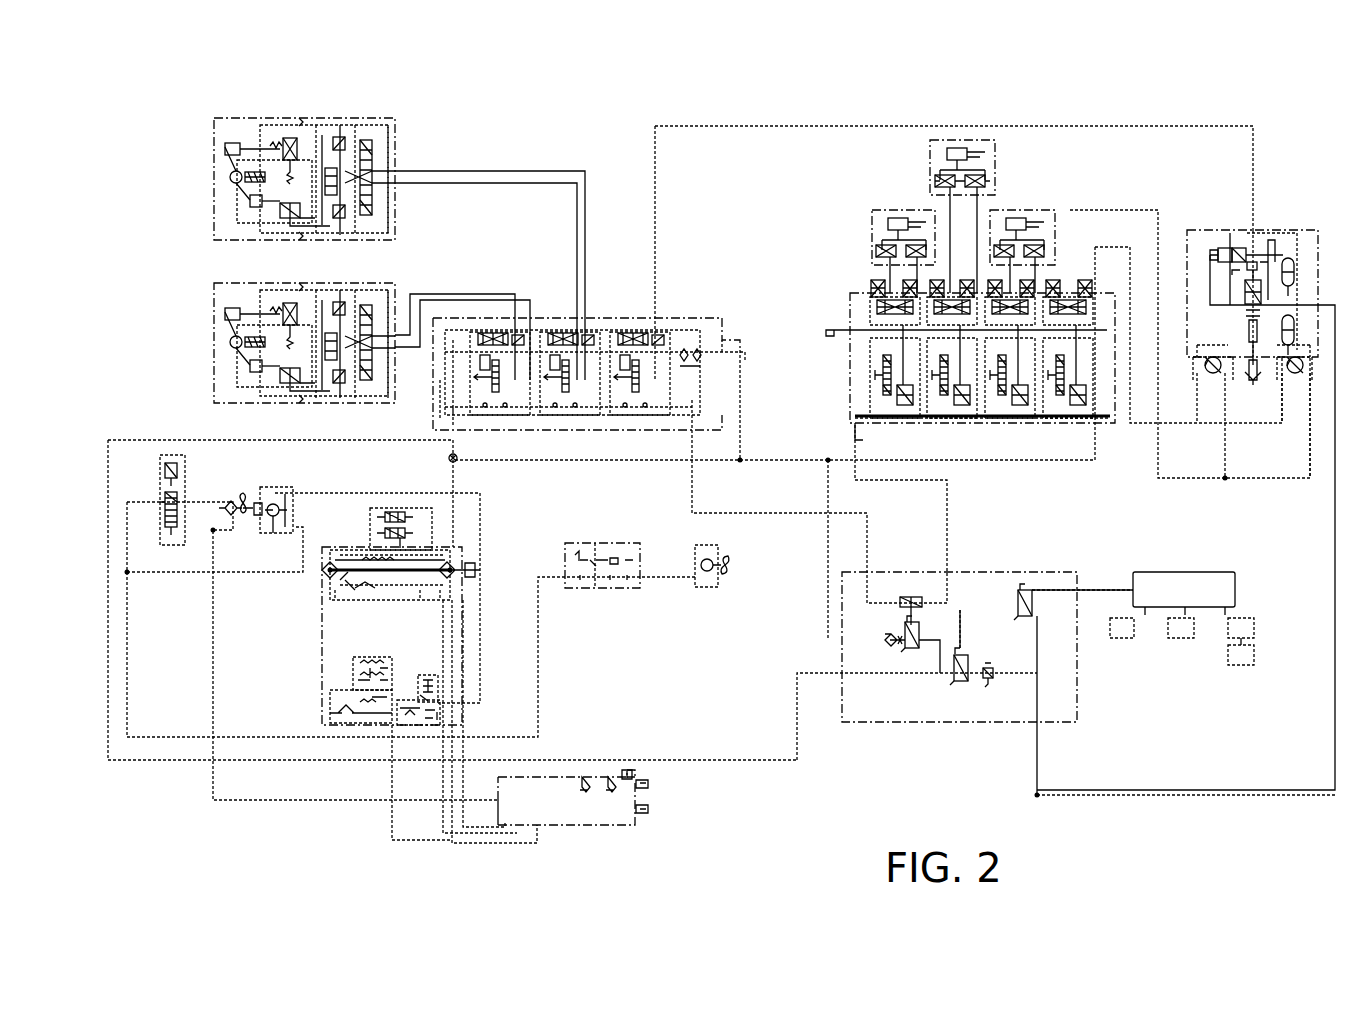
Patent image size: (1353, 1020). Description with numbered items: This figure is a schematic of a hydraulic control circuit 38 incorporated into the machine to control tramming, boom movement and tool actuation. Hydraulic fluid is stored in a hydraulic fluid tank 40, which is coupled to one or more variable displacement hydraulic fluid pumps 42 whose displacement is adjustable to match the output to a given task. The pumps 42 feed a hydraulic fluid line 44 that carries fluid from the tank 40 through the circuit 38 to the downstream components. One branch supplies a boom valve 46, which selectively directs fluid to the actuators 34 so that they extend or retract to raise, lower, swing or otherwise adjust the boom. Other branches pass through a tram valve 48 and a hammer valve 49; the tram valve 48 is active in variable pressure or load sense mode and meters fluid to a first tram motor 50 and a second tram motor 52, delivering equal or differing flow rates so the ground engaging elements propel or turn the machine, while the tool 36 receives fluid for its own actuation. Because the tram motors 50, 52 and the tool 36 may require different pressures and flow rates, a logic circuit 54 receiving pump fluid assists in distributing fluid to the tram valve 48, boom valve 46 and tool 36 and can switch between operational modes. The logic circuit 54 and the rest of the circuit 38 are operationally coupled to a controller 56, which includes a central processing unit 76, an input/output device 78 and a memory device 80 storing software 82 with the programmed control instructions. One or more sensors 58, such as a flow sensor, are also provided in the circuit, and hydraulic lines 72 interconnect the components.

The actuators 34 is at (996, 170).
The tool 36 is at (1270, 230).
The hydraulic control circuit 38 is at (1122, 110).
The hydraulic fluid tank 40 is at (594, 825).
The variable displacement hydraulic fluid pumps 42 is at (323, 547).
The hydraulic fluid line 44 is at (1100, 797).
The boom valve 46 is at (1055, 423).
The tram valve 48 is at (503, 323).
The hammer valve 49 is at (630, 323).
The first tram motor 50 is at (395, 128).
The second tram motor 52 is at (393, 283).
The logic circuit 54 is at (1088, 688).
The controller 56 is at (1178, 572).
The sensors 58 is at (449, 455).
The hydraulic line 72 is at (877, 545).
The central processing unit 76 is at (1122, 628).
The input/output device 78 is at (1181, 628).
The memory device 80 is at (1241, 631).
The software 82 is at (1241, 655).